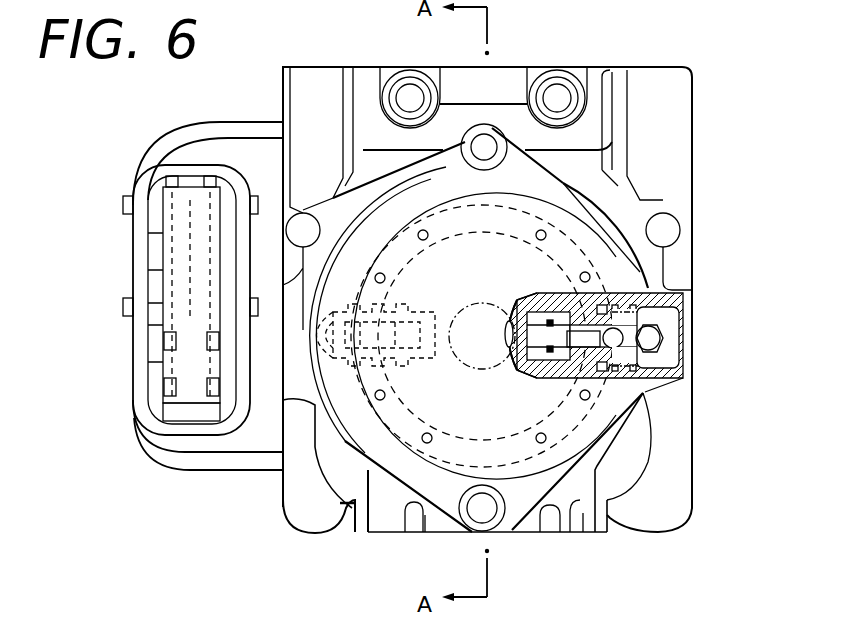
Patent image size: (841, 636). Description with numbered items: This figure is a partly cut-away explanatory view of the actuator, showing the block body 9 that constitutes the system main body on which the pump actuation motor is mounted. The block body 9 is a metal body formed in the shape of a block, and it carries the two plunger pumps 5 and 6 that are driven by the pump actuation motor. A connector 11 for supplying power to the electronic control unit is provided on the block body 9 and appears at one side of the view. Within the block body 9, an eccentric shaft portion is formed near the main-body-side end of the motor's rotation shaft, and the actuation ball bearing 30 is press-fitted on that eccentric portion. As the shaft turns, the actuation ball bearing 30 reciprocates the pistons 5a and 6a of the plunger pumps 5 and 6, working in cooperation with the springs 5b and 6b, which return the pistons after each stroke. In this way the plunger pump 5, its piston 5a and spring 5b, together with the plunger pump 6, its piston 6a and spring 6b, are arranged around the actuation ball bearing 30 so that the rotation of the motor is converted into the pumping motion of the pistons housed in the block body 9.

The plunger pump 5 is at (570, 268).
The piston 5a is at (650, 406).
The spring 5b is at (655, 320).
The plunger pump 6 is at (337, 386).
The piston 6a is at (412, 340).
The spring 6b is at (330, 370).
The block body 9 is at (637, 67).
The connector 11 is at (165, 160).
The actuation ball bearing 30 is at (566, 388).